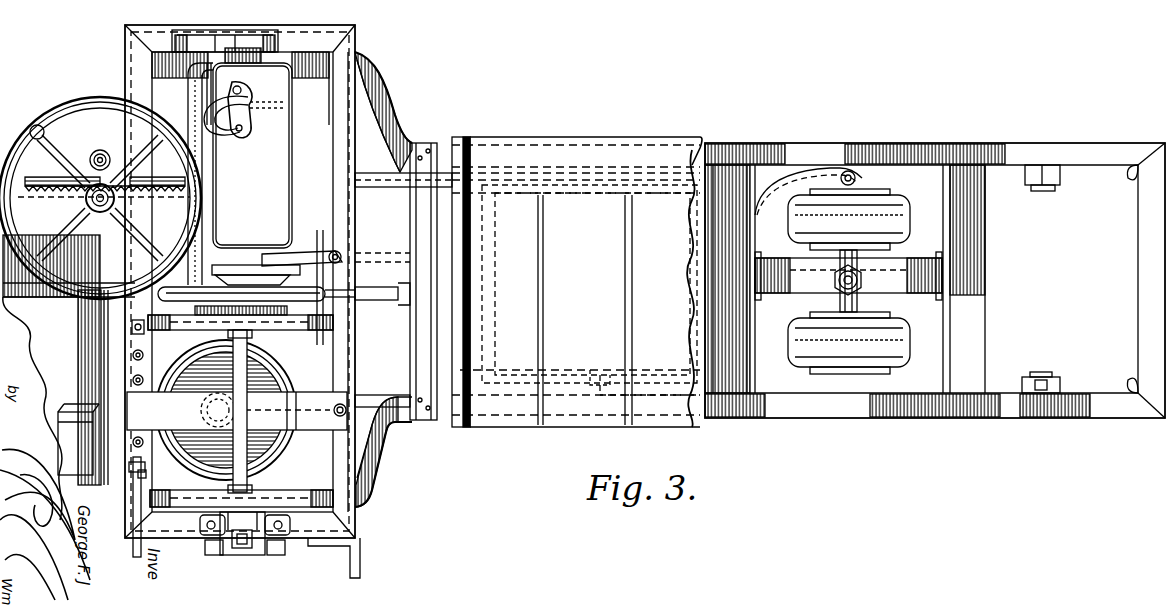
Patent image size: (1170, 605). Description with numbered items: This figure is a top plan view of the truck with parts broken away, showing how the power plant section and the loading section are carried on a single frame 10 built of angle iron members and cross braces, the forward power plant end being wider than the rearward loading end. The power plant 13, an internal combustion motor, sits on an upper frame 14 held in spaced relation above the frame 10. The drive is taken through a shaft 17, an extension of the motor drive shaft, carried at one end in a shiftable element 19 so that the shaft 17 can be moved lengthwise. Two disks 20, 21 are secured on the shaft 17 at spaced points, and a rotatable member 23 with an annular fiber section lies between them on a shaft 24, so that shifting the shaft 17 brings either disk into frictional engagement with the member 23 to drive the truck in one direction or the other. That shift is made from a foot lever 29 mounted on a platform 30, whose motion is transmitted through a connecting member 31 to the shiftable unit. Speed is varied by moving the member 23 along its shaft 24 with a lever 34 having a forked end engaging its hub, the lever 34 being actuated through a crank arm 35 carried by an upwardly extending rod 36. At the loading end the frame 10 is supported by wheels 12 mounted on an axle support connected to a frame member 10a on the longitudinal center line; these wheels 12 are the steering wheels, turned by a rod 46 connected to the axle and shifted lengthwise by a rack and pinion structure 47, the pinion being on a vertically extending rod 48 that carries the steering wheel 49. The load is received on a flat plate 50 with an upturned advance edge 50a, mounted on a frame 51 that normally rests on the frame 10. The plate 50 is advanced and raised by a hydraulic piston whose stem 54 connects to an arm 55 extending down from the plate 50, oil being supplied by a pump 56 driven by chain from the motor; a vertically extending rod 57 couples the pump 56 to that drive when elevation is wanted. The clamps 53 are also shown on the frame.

The frame 10 is at (957, 143).
The frame member 10a is at (784, 274).
The wheels 12 is at (893, 212).
The power plant 13 is at (244, 174).
The upper frame 14 is at (350, 359).
The shaft 17 is at (226, 410).
The shiftable element 19 is at (245, 549).
The disk 20 is at (348, 343).
The disk 21 is at (356, 503).
The rotatable member 23 is at (272, 446).
The shaft 24 is at (200, 409).
The foot lever 29 is at (78, 439).
The platform 30 is at (79, 387).
The connecting member 31 is at (130, 472).
The lever 34 is at (303, 392).
The crank arm 35 is at (50, 322).
The rod 36 is at (133, 333).
The rod 46 is at (381, 177).
The rack and pinion structure 47 is at (60, 203).
The vertically extending rod 48 is at (99, 150).
The steering wheel 49 is at (55, 111).
The plate 50 is at (645, 150).
The upturned edge 50a is at (468, 155).
The frame 51 is at (520, 388).
The clamps 53 is at (1045, 187).
The piston stem 54 is at (375, 287).
The arm 55 is at (700, 313).
The pump 56 is at (338, 254).
The vertically extending rod 57 is at (231, 310).